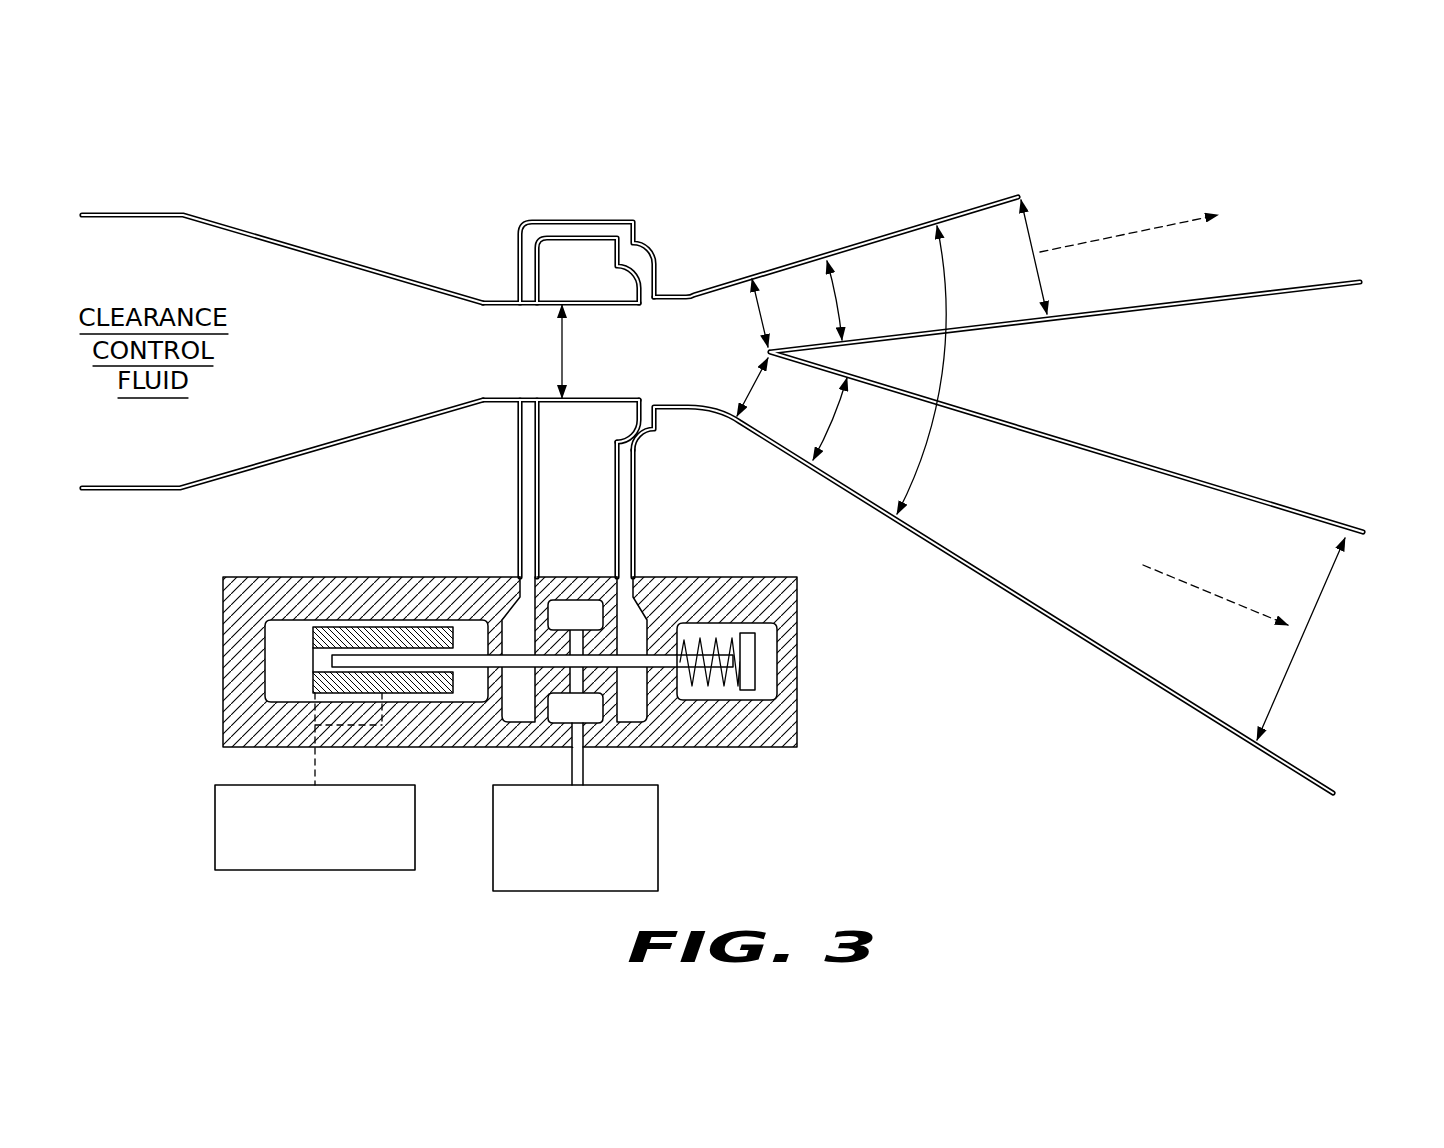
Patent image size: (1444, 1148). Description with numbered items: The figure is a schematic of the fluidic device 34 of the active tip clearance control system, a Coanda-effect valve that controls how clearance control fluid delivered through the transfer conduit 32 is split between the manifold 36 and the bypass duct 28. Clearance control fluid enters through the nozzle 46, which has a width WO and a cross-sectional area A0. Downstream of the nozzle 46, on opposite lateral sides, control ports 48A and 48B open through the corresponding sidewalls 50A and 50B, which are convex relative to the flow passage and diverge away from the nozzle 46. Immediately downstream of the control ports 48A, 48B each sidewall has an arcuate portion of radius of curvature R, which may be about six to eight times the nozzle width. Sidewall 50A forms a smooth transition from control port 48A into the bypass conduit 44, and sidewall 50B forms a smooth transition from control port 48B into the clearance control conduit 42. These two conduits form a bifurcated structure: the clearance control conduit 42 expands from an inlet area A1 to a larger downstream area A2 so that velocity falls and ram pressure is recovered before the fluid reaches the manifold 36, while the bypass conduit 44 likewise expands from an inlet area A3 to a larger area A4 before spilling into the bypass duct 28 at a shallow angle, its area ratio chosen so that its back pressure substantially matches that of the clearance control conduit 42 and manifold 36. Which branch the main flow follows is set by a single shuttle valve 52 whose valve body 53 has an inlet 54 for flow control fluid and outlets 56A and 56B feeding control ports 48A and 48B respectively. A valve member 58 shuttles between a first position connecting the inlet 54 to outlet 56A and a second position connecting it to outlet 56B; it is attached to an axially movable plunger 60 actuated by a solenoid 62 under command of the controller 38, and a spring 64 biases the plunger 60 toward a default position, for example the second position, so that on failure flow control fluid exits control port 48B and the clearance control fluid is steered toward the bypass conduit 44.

The bypass duct 28 is at (1274, 233).
The transfer conduit 32 is at (222, 260).
The fluidic device 34 is at (615, 195).
The manifold 36 is at (1352, 723).
The controller 38 is at (296, 860).
The clearance control conduit 42 is at (1013, 537).
The bypass conduit 44 is at (978, 238).
The nozzle 46 is at (519, 344).
The control port 48A is at (647, 300).
The control port 48B is at (647, 403).
The sidewall 50A is at (701, 289).
The sidewall 50B is at (700, 414).
The shuttle valve 52 is at (209, 697).
The valve body 53 is at (240, 660).
The inlet 54 is at (583, 762).
The outlet 56A is at (528, 578).
The outlet 56B is at (622, 577).
The valve member 58 is at (577, 688).
The plunger 60 is at (380, 662).
The solenoid 62 is at (330, 632).
The spring 64 is at (727, 692).
The radius of curvature R is at (686, 288).
The cross-sectional area of nozzle A0 is at (560, 357).
The cross-sectional area at inlet of clearance control conduit A1 is at (762, 387).
The cross-sectional area downstream in clearance control conduit A2 is at (1285, 680).
The cross-sectional area at inlet of bypass conduit A3 is at (775, 313).
The cross-sectional area downstream in bypass conduit A4 is at (1033, 235).